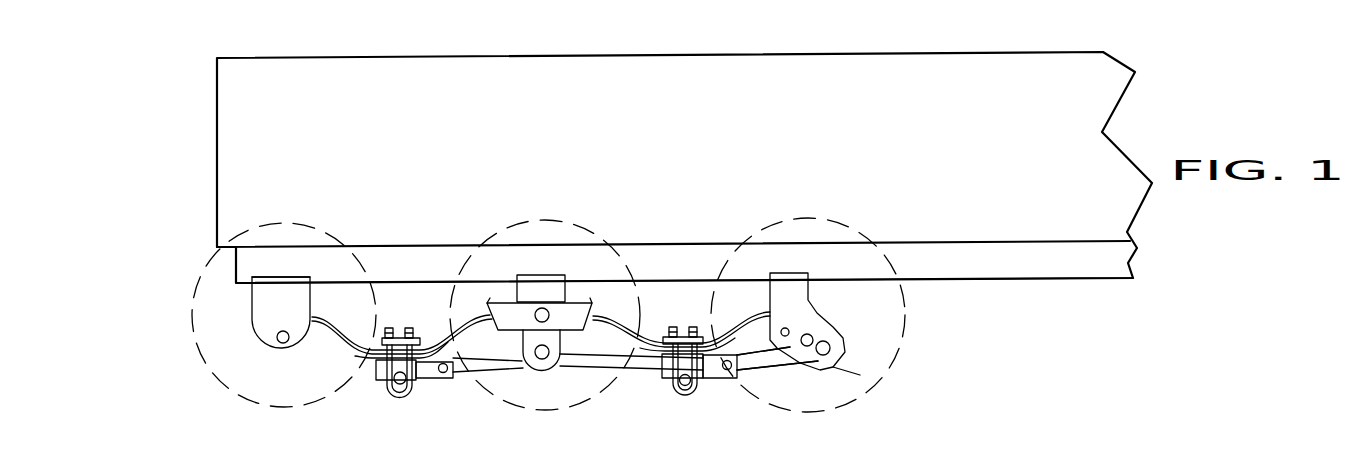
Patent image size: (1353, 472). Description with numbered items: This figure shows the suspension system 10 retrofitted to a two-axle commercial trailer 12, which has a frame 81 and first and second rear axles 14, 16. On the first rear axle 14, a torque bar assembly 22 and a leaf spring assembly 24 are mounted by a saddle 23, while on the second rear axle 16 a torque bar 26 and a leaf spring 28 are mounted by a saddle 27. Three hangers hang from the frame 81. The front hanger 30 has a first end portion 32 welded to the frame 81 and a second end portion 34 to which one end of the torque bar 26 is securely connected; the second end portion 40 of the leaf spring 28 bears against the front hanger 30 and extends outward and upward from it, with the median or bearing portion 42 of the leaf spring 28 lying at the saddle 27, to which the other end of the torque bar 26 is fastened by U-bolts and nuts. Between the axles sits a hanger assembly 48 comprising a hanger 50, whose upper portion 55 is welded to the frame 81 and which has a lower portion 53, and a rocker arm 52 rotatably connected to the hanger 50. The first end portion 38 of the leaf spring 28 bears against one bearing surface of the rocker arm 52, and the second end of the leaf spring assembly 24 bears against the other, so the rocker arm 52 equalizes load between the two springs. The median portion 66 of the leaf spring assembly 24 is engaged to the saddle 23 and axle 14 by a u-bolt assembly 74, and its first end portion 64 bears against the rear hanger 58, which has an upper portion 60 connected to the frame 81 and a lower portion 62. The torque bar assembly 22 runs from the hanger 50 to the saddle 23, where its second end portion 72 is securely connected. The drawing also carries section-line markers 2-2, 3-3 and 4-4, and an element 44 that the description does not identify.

The suspension system 10 is at (636, 298).
The commercial trailer 12 is at (1158, 157).
The first rear axle 14 is at (397, 392).
The second rear axle 16 is at (688, 388).
The torque bar assembly 22 is at (548, 333).
The saddle 23 is at (422, 382).
The leaf spring assembly 24 is at (330, 345).
The torque bar 26 is at (770, 365).
The saddle 27 is at (752, 375).
The leaf spring 28 is at (667, 336).
The front hanger 30 is at (845, 340).
The first end portion 32 is at (797, 273).
The second end portion 34 is at (840, 370).
The first end portion 38 is at (615, 315).
The second end portion 40 is at (747, 330).
The median or bearing portion 42 is at (707, 347).
The U-bolt nuts 44 is at (698, 318).
The hanger assembly 48 is at (536, 259).
The hanger 50 is at (607, 357).
The rocker arm 52 is at (503, 297).
The lower portion 53 is at (547, 368).
The upper portion 55 is at (553, 275).
The rear hanger 58 is at (250, 313).
The upper portion 60 is at (262, 273).
The lower portion 62 is at (297, 343).
The first end portion 64 is at (331, 335).
The median portion 66 is at (422, 345).
The second end portion 72 is at (458, 380).
The u-bolt assembly 74 is at (392, 328).
The frame 81 is at (1025, 278).
The section line 2-2 is at (898, 355).
The section line 3-3 is at (568, 405).
The section line 4-4 is at (245, 403).